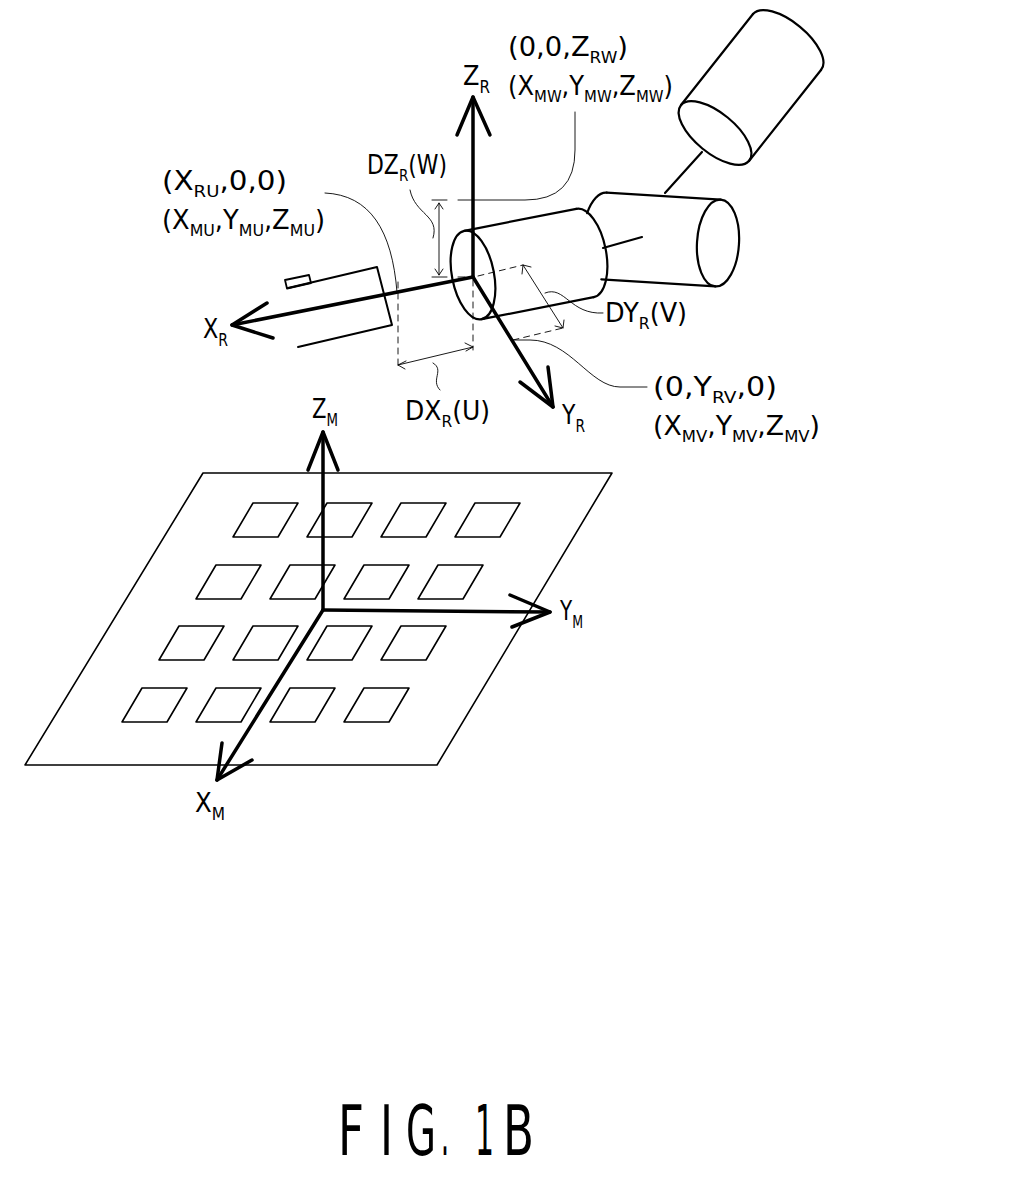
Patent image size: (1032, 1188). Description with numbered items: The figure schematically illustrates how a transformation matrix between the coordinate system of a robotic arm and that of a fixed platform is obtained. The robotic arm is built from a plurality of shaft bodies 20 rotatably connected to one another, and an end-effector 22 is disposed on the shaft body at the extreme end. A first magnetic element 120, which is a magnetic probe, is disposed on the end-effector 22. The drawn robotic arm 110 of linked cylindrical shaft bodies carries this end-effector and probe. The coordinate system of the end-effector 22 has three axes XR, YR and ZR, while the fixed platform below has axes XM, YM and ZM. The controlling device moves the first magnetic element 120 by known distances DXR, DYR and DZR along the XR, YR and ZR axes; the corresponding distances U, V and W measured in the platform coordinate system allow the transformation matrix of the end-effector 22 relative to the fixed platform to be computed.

The end-effector 22 is at (363, 335).
The first magnetic element 120 is at (285, 280).
The robot arm 110 is at (634, 166).
The shaft bodies 20 is at (318, 619).